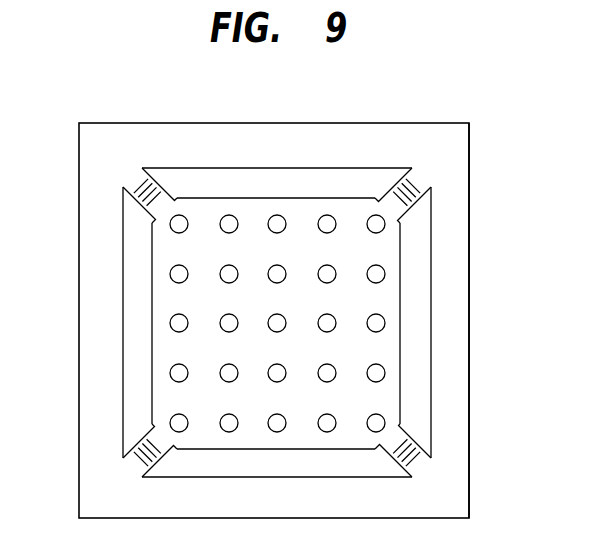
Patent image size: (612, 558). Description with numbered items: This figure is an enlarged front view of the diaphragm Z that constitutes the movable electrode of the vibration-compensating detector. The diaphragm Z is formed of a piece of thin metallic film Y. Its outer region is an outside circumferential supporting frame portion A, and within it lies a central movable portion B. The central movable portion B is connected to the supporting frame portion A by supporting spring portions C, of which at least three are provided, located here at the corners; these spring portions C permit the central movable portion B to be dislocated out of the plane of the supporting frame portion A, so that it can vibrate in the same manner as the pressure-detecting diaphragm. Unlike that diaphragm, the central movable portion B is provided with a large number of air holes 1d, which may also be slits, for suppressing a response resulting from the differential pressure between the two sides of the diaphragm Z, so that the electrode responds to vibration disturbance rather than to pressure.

The diaphragm Z is at (372, 100).
The thin metallic film Y is at (474, 166).
The supporting frame portion A is at (95, 323).
The central movable portion B is at (385, 347).
The supporting spring portion C is at (142, 192).
The air holes 1d is at (273, 214).